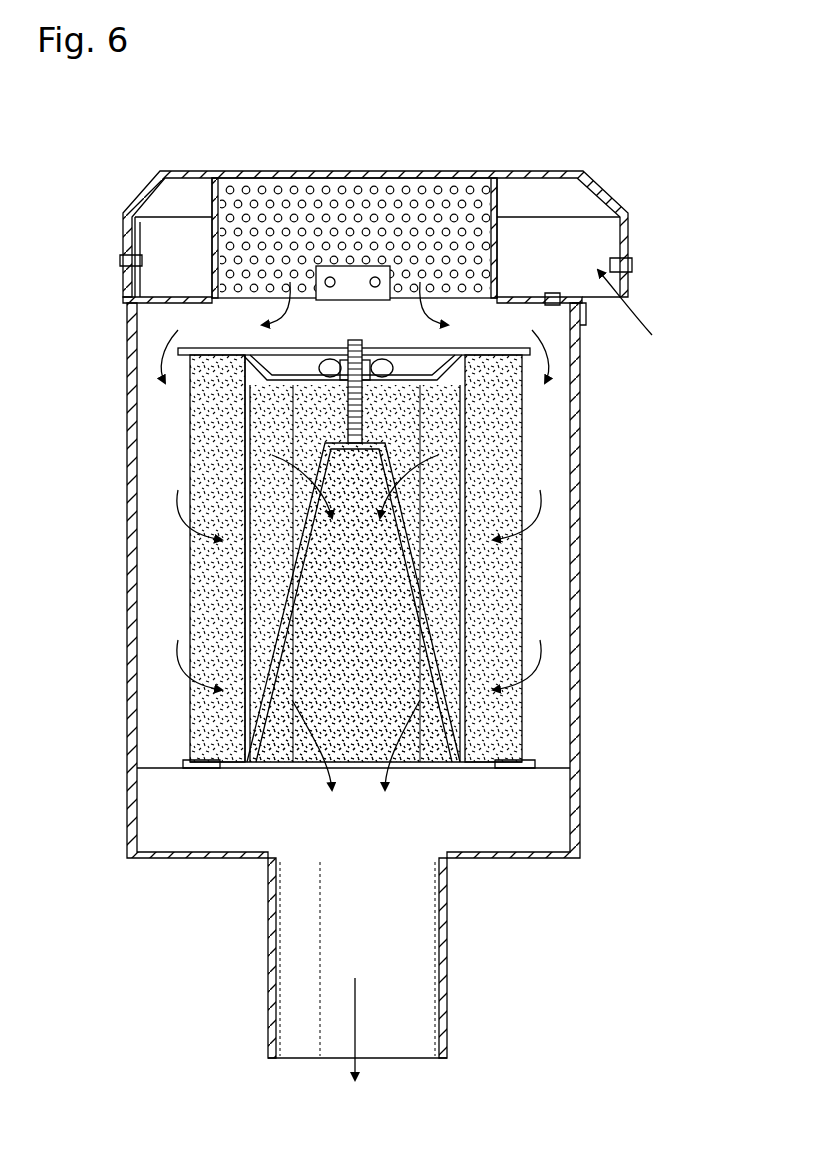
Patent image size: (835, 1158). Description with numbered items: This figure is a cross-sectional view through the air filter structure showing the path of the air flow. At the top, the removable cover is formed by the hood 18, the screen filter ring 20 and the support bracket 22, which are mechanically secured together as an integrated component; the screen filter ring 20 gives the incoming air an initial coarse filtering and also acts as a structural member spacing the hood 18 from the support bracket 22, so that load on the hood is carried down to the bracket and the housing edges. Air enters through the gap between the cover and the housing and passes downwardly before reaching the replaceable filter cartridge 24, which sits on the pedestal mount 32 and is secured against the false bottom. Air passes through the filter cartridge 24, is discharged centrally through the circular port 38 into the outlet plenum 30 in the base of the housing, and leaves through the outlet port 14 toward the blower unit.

The outlet port 14 is at (450, 968).
The hood 18 is at (463, 176).
The screen filter ring 20 is at (497, 202).
The support bracket 22 is at (173, 300).
The replaceable filter cartridge 24 is at (500, 485).
The outlet plenum 30 is at (515, 808).
The pedestal mount 32 is at (420, 605).
The circular port 38 is at (300, 770).